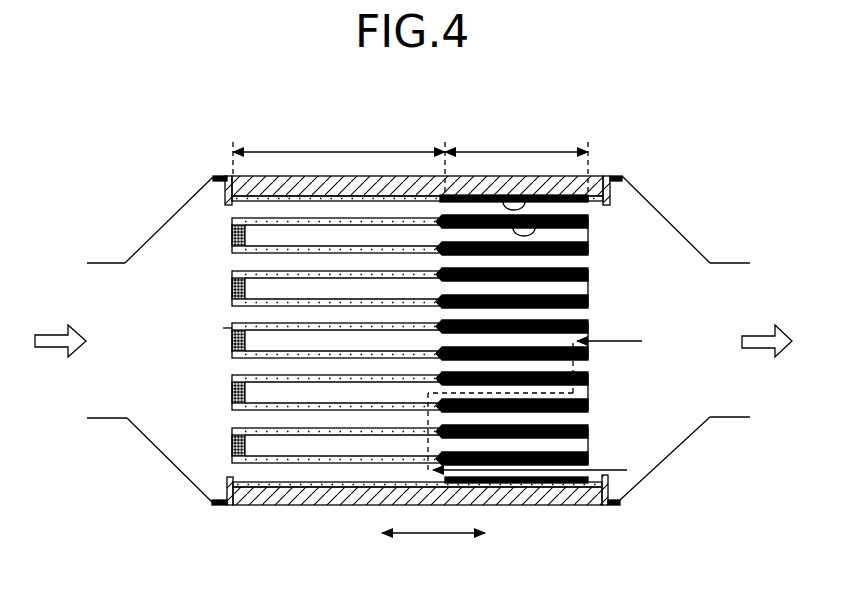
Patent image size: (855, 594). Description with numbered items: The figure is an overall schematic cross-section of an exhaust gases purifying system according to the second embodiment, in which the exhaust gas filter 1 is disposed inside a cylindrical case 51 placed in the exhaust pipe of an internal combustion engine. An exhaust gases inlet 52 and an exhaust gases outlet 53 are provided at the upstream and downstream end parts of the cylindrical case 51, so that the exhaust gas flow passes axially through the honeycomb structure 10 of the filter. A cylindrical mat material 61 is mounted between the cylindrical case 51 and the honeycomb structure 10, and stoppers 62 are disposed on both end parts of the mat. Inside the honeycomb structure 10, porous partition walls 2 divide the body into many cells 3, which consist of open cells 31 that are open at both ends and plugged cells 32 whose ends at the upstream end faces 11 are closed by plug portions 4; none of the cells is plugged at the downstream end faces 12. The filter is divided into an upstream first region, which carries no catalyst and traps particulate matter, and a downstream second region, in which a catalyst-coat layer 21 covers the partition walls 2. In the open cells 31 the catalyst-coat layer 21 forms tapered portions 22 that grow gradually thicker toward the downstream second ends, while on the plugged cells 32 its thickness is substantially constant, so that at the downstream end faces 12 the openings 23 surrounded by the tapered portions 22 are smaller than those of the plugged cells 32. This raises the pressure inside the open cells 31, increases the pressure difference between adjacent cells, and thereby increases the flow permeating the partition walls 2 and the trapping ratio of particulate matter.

The exhaust gas filter 1 is at (604, 244).
The partition walls 2 is at (297, 405).
The cells 3 is at (55, 457).
The plug portions 4 is at (232, 240).
The honeycomb structure 10 is at (389, 187).
The upstream end faces 11 is at (223, 328).
The downstream end faces 12 is at (585, 328).
The catalyst-coat layer 21 is at (549, 230).
The tapered portions 22 is at (585, 467).
The openings 23 is at (573, 263).
The open cells 31 is at (242, 417).
The plugged cells 32 is at (253, 445).
The cylindrical case 51 is at (177, 212).
The exhaust gases inlet 52 is at (107, 262).
The exhaust gases outlet 53 is at (727, 263).
The cylindrical mat material 61 is at (350, 498).
The stoppers 62 is at (228, 506).